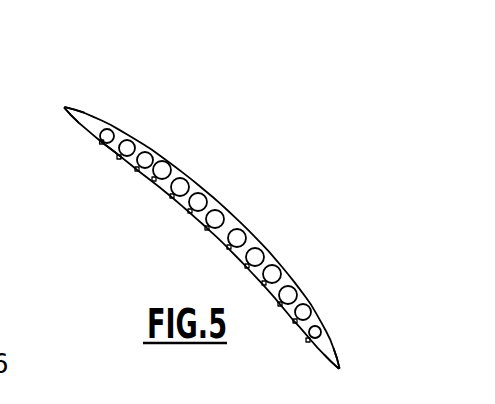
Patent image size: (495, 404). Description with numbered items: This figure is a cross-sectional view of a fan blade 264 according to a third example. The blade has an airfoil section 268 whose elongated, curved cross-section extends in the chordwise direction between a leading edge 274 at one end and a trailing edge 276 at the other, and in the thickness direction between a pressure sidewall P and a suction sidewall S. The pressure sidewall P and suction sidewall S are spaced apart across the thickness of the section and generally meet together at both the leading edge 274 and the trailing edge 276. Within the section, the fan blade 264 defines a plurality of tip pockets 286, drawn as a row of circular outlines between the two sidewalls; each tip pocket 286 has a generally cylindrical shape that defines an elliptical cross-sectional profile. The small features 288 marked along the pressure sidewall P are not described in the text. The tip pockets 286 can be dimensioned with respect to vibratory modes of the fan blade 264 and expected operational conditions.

The fan blade 264 is at (203, 200).
The leading edge 274 is at (73, 113).
The trailing edge 276 is at (337, 357).
The airfoil section 268 is at (105, 162).
The tip pockets 286 is at (163, 169).
The cooling holes 288 is at (174, 199).
The suction sidewall S is at (238, 220).
The pressure sidewall P is at (213, 237).